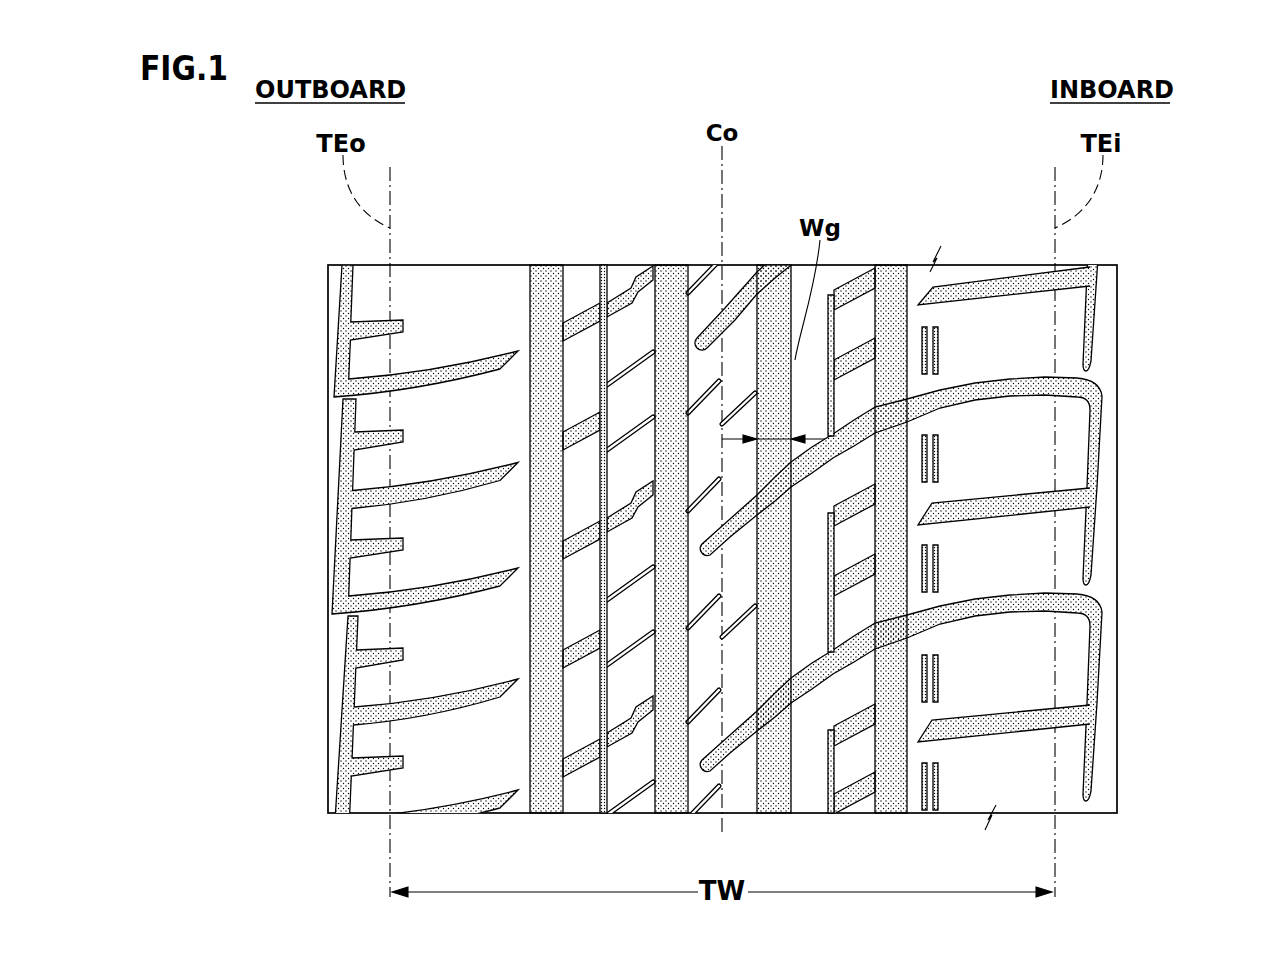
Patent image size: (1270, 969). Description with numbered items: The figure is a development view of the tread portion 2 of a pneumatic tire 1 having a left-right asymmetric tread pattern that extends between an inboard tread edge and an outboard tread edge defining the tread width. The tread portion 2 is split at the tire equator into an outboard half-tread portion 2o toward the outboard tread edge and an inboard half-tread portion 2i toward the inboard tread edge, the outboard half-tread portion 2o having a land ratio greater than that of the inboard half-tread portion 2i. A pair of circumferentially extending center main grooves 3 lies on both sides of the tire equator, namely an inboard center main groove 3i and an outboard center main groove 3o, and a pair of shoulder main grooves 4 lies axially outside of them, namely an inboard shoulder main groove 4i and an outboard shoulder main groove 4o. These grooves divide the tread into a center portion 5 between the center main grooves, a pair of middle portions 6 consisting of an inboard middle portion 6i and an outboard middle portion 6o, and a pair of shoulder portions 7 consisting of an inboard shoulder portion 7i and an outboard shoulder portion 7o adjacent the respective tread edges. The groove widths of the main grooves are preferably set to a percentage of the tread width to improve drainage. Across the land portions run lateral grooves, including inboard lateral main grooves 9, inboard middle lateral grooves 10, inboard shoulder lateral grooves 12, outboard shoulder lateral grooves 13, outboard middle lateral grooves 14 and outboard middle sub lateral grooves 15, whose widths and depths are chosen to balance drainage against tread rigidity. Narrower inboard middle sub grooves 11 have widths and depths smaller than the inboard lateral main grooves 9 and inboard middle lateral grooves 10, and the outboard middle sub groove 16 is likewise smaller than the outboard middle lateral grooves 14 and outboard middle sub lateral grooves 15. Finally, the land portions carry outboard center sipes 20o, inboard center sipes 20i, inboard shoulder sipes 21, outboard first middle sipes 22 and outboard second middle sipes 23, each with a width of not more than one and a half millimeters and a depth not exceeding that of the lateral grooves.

The pneumatic tire 1 is at (794, 478).
The tread portion 2 is at (1146, 219).
The outboard half-tread portion 2o is at (392, 164).
The inboard half-tread portion 2i is at (1052, 164).
The center main grooves 3 is at (733, 491).
The outboard center main groove 3o is at (668, 283).
The inboard center main groove 3i is at (773, 433).
The shoulder main grooves 4 is at (722, 491).
The outboard shoulder main groove 4o is at (541, 283).
The inboard shoulder main groove 4i is at (887, 275).
The center portion 5 is at (719, 523).
The middle portions 6 is at (833, 572).
The outboard middle portion 6o is at (446, 536).
The inboard middle portion 6i is at (792, 828).
The shoulder portions 7 is at (1064, 572).
The outboard shoulder portion 7o is at (383, 571).
The inboard shoulder portion 7i is at (1064, 572).
The inboard lateral main grooves 9 is at (997, 382).
The inboard middle lateral grooves 10 is at (995, 585).
The inboard middle sub grooves 11 is at (833, 310).
The inboard shoulder lateral grooves 12 is at (998, 496).
The outboard shoulder lateral grooves 13 is at (447, 692).
The outboard middle lateral grooves 14 is at (580, 533).
The outboard middle sub lateral grooves 15 is at (580, 643).
The outboard middle sub groove 16 is at (603, 367).
The outboard center sipes 20o is at (697, 273).
The inboard center sipes 20i is at (736, 395).
The inboard shoulder sipes 21 is at (940, 680).
The outboard first middle sipes 22 is at (647, 485).
The outboard second middle sipes 23 is at (638, 357).